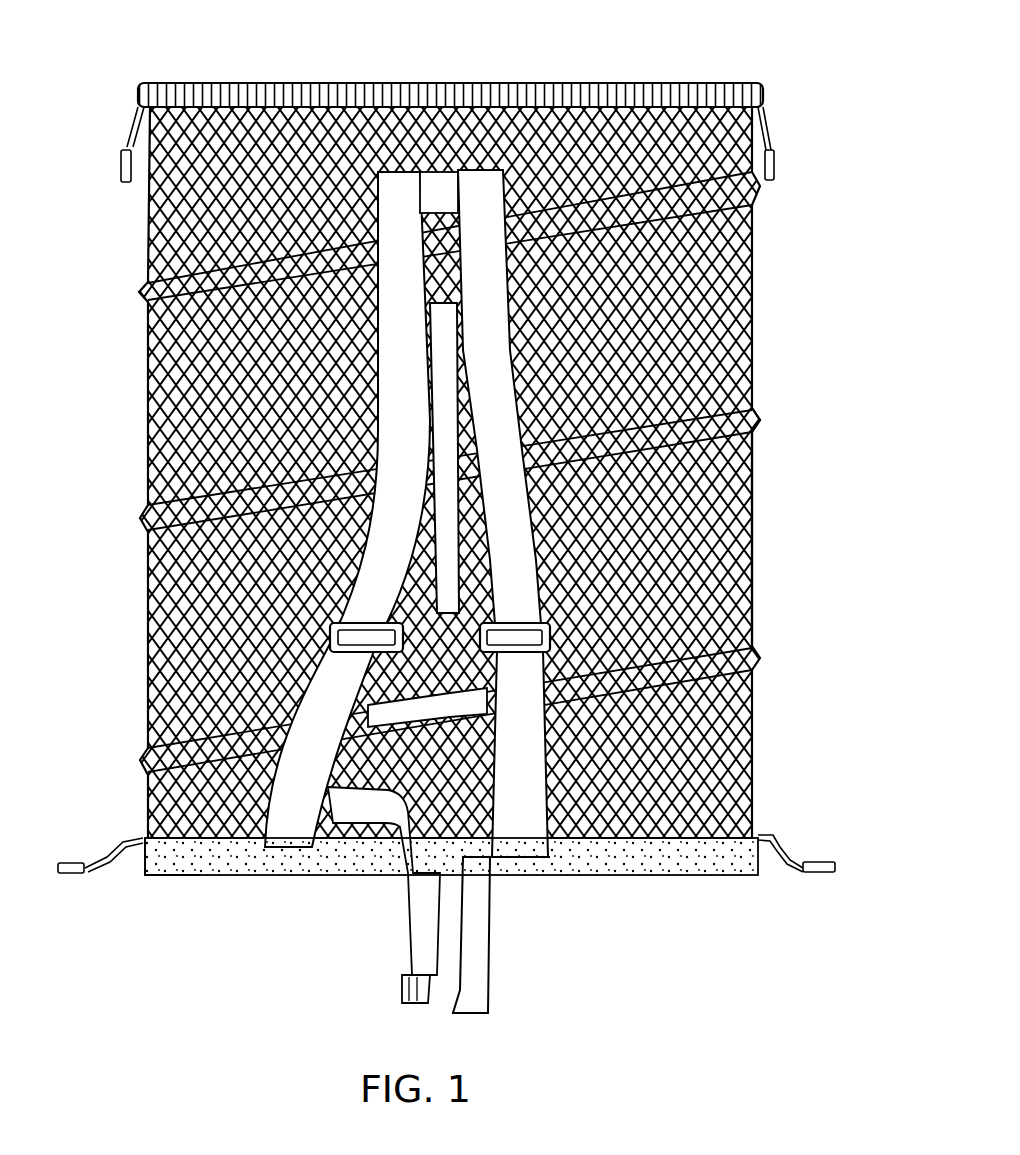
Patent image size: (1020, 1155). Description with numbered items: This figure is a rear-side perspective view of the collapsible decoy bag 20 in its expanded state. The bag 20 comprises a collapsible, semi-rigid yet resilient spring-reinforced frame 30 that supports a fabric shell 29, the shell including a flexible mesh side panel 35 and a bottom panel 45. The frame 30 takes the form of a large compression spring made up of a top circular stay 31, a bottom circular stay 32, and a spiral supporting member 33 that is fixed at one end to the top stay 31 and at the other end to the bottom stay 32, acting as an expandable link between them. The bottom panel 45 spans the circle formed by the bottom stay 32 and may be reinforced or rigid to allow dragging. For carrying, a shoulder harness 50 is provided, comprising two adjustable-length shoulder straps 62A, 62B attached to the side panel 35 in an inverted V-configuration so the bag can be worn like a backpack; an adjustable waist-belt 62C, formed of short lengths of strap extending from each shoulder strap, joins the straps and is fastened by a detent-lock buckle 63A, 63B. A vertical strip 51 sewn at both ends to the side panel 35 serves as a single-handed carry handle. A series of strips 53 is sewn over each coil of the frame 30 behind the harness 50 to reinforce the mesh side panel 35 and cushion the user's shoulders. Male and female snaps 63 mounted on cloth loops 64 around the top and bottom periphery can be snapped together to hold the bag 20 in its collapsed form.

The collapsible decoy bag 20 is at (166, 42).
The fabric shell 29 is at (112, 390).
The spring-reinforced frame 30 is at (762, 398).
The top circular stay 31 is at (710, 83).
The bottom circular stay 32 is at (150, 880).
The spiral supporting member 33 is at (764, 418).
The flexible side panel 35 is at (760, 552).
The bottom panel 45 is at (708, 878).
The shoulder harness 50 is at (517, 850).
The vertical strip 51 is at (441, 428).
The strips 53 is at (306, 100).
The shoulder strap 62A is at (395, 215).
The shoulder strap 62B is at (482, 205).
The adjustable waist-belt 62C is at (477, 940).
The male and female snaps 63 is at (120, 178).
The detent-lock buckle 63A is at (396, 995).
The detent-lock buckle 63B is at (494, 1011).
The cloth loops 64 is at (126, 135).